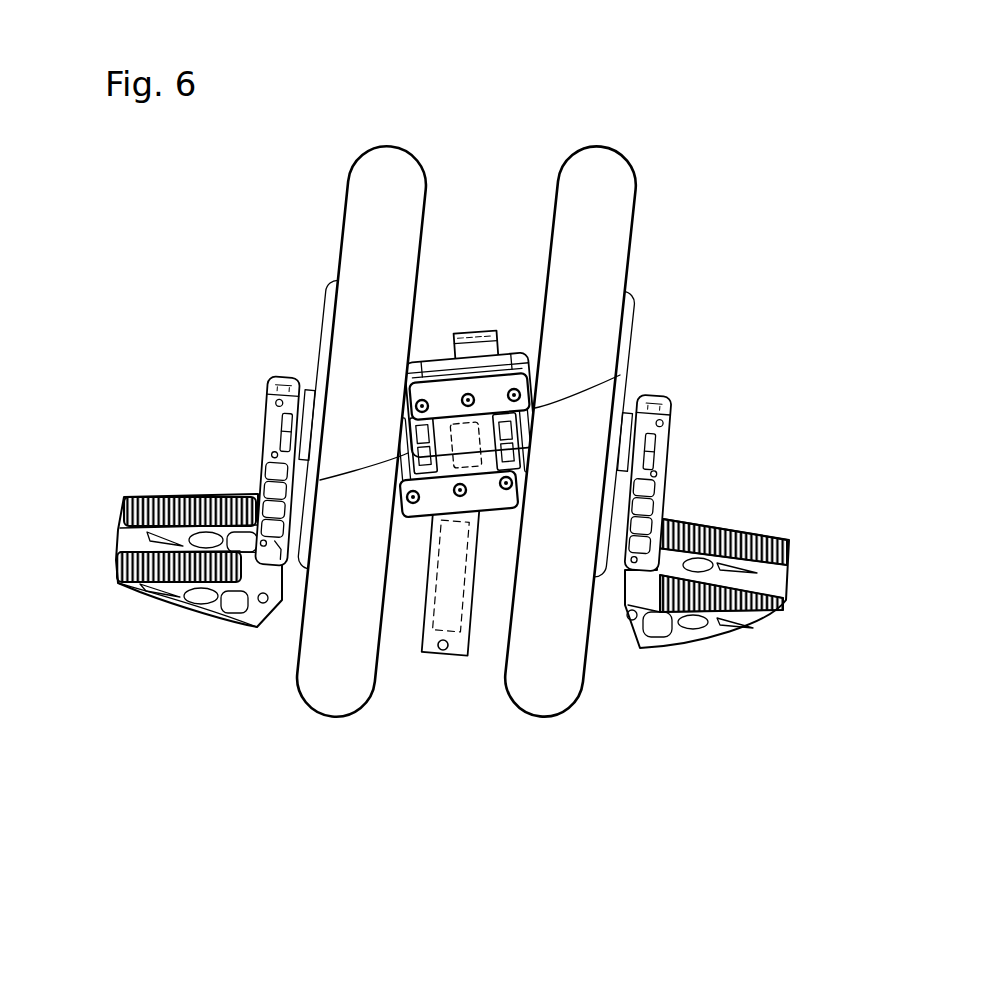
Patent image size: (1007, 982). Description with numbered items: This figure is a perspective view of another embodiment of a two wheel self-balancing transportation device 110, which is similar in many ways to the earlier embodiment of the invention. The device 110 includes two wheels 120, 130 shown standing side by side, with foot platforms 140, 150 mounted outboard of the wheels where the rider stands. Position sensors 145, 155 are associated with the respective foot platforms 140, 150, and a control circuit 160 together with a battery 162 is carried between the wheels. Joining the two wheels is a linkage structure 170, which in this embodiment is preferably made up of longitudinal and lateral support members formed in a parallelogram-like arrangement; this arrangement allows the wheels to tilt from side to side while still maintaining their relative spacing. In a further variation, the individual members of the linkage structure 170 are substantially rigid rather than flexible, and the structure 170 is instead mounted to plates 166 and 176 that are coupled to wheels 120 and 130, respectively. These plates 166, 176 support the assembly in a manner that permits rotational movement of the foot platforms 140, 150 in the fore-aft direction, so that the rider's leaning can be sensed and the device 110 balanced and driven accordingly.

The two wheel self-balancing transportation device 110 is at (765, 123).
The wheel 120 is at (563, 715).
The wheel 130 is at (310, 708).
The foot platform 140 is at (755, 520).
The position sensor 145 is at (673, 397).
The foot platform 150 is at (162, 493).
The position sensor 155 is at (283, 378).
The control circuit 160 is at (478, 428).
The battery 162 is at (450, 607).
The plate 166 is at (535, 408).
The linkage structure 170 is at (453, 292).
The plate 176 is at (408, 453).